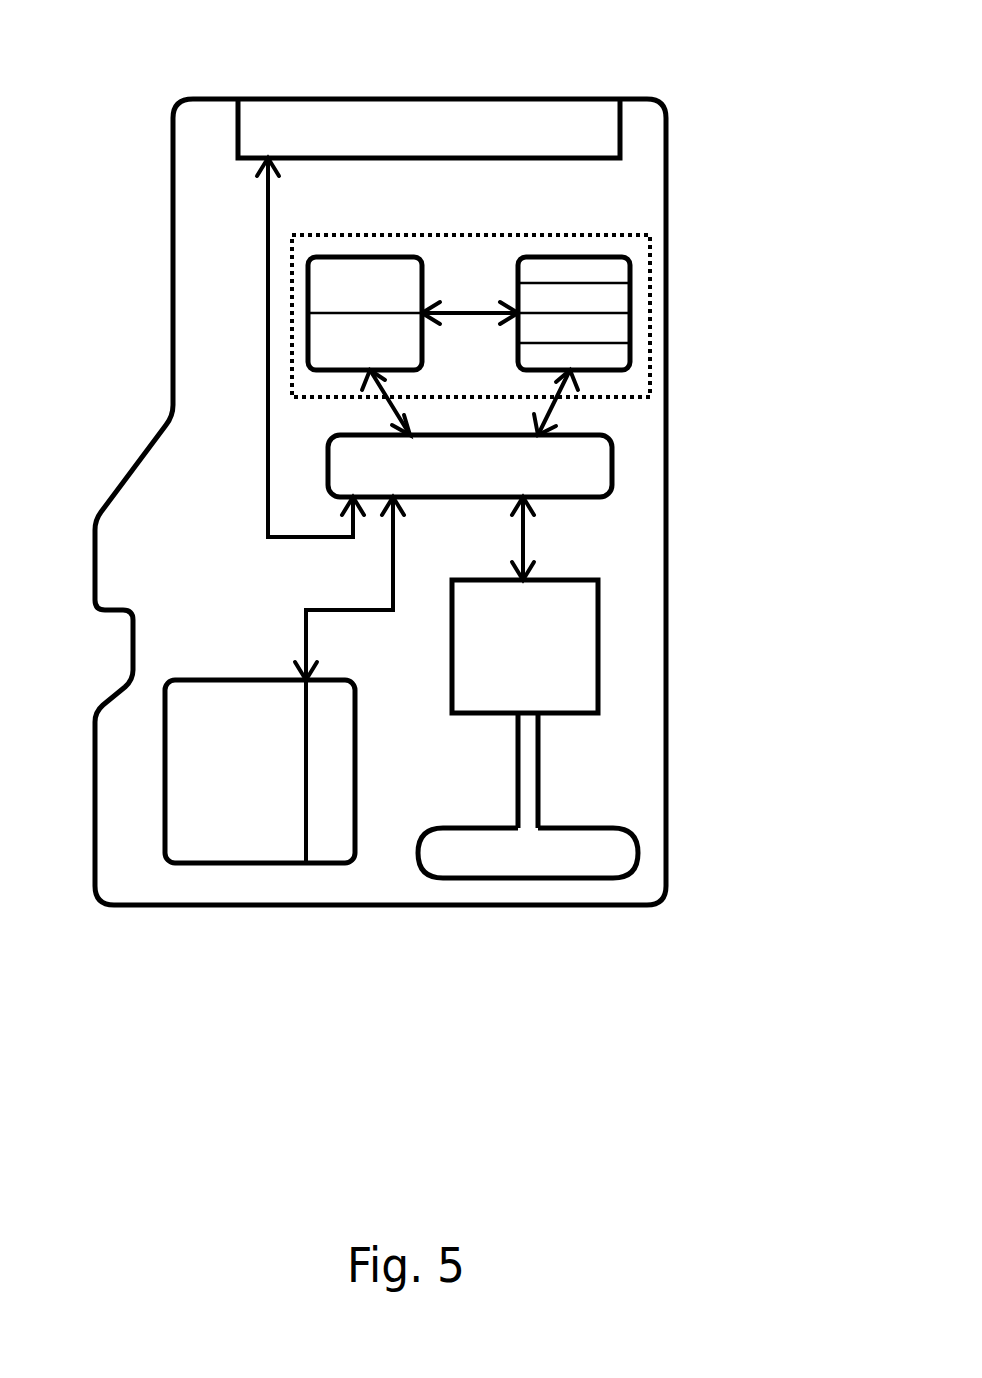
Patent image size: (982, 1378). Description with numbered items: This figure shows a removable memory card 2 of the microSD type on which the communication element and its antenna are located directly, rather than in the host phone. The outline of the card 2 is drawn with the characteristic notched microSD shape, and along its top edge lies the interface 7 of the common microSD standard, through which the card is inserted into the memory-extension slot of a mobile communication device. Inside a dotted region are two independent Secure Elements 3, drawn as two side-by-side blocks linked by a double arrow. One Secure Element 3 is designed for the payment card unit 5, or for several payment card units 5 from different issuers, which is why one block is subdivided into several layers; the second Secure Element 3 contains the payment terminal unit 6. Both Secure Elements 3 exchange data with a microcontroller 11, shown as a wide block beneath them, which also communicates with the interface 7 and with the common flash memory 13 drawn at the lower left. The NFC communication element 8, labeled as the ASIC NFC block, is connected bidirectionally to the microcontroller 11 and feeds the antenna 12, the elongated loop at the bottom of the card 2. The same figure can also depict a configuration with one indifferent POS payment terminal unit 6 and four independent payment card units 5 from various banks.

The removable memory card 2 is at (633, 182).
The Secure Element 3 is at (292, 272).
The payment card unit 5 is at (600, 353).
The payment terminal unit 6 is at (398, 298).
The interface 7 is at (390, 127).
The NFC communication element 8 is at (557, 675).
The microcontroller 11 is at (543, 468).
The antenna of the removable memory card 12 is at (573, 858).
The flash memory 13 is at (247, 818).